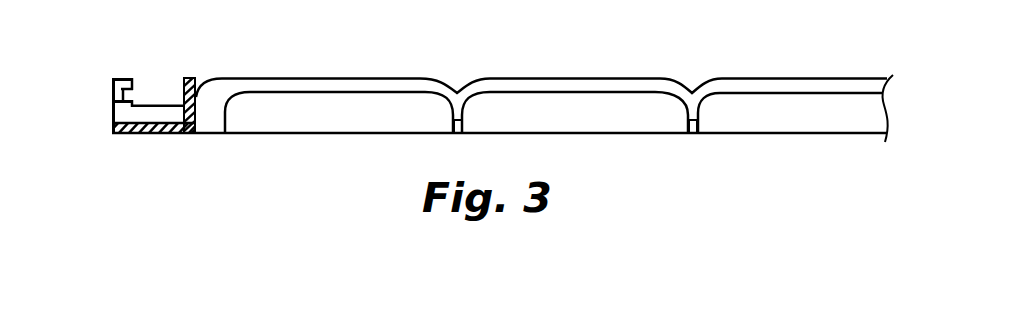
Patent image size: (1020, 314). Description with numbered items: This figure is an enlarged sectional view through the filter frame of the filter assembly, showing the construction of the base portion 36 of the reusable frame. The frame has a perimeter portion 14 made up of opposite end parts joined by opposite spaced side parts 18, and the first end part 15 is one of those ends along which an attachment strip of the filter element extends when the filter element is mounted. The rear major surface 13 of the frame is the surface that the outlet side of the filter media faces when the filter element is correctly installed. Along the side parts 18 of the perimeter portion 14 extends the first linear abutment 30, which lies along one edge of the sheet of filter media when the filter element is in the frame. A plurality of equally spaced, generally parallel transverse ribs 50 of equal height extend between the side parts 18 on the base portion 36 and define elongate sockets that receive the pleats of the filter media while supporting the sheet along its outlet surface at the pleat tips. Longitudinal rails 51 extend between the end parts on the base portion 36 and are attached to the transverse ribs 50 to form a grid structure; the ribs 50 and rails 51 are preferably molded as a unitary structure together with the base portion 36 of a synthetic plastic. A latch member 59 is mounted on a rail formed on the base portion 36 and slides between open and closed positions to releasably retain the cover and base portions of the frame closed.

The rear major surface 13 is at (180, 134).
The perimeter portion 14 is at (113, 114).
The first end part 15 is at (590, 122).
The side parts 18 is at (183, 88).
The first linear abutment 30 is at (198, 86).
The base portion 36 is at (287, 134).
The transverse ribs 50 is at (352, 80).
The longitudinal rails 51 is at (455, 134).
The latch member 59 is at (112, 84).